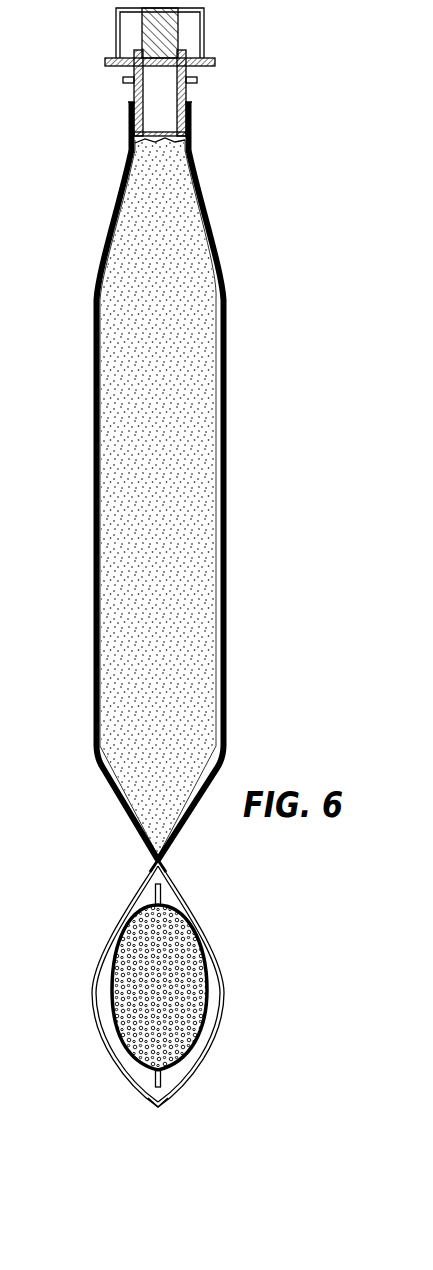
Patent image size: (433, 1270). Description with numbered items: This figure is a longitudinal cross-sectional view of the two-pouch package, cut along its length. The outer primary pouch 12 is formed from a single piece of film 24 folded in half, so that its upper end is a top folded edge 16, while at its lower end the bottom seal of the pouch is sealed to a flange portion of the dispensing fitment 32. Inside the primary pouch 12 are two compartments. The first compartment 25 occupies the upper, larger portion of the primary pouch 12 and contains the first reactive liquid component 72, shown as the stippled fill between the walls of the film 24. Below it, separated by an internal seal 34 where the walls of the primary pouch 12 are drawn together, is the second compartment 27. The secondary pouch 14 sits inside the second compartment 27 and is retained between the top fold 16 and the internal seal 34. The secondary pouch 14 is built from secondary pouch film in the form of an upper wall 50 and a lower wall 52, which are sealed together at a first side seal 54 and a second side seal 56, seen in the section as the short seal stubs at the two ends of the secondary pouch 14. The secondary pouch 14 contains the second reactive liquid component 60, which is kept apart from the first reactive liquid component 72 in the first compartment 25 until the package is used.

The primary pouch 12 is at (224, 313).
The secondary pouch 14 is at (112, 970).
The top folded edge 16 is at (157, 1106).
The film 24 is at (93, 455).
The first compartment 25 is at (205, 375).
The second compartment 27 is at (205, 1035).
The dispensing fitment 32 is at (187, 97).
The internal seal 34 is at (156, 858).
The upper wall 50 is at (110, 995).
The lower wall 52 is at (210, 978).
The first side seal 54 is at (170, 888).
The second side seal 56 is at (163, 1073).
The second reactive liquid component 60 is at (140, 1020).
The first reactive liquid component 72 is at (190, 571).